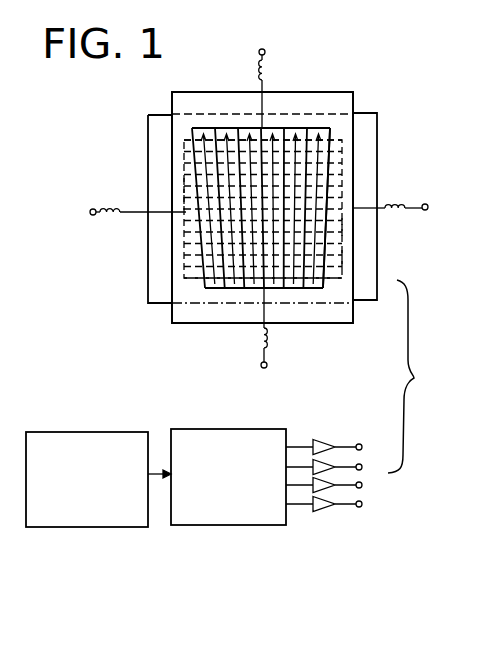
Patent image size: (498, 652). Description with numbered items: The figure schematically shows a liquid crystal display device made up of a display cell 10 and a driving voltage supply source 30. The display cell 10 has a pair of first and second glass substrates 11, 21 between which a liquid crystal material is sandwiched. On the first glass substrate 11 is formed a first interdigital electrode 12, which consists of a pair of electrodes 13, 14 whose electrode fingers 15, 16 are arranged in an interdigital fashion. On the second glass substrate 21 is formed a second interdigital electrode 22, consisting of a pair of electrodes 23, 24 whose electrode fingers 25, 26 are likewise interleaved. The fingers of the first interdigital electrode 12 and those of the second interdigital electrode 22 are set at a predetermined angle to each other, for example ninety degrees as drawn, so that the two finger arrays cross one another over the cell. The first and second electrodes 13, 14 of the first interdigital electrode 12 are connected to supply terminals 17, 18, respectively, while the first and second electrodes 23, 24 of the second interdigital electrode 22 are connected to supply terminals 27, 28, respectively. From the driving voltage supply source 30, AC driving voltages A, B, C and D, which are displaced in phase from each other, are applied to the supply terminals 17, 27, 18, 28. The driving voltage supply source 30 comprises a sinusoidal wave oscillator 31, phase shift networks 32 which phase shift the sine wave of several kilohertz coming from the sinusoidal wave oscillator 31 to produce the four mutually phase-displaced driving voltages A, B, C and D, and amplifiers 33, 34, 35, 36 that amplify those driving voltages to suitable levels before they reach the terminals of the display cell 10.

The display cell 10 is at (151, 100).
The first glass substrate 11 is at (340, 91).
The first interdigital electrode 12 is at (224, 120).
The first electrode of first interdigital electrode 13 is at (300, 127).
The second electrode of first interdigital electrode 14 is at (313, 290).
The electrode fingers 15 is at (330, 142).
The electrode fingers 16 is at (292, 290).
The supply terminal 17 is at (266, 52).
The supply terminal 18 is at (261, 365).
The second glass substrate 21 is at (378, 125).
The second interdigital electrode 22 is at (184, 253).
The first electrode of second interdigital electrode 23 is at (185, 202).
The second electrode of second interdigital electrode 24 is at (345, 255).
The electrode fingers 25 is at (187, 187).
The electrode fingers 26 is at (341, 225).
The supply terminal 27 is at (93, 215).
The supply terminal 28 is at (424, 204).
The driving voltage supply source 30 is at (97, 418).
The sinusoidal wave oscillator 31 is at (95, 528).
The phase shift networks 32 is at (215, 526).
The amplifier 33 is at (325, 445).
The amplifier 34 is at (313, 462).
The amplifier 35 is at (313, 490).
The amplifier 36 is at (325, 509).